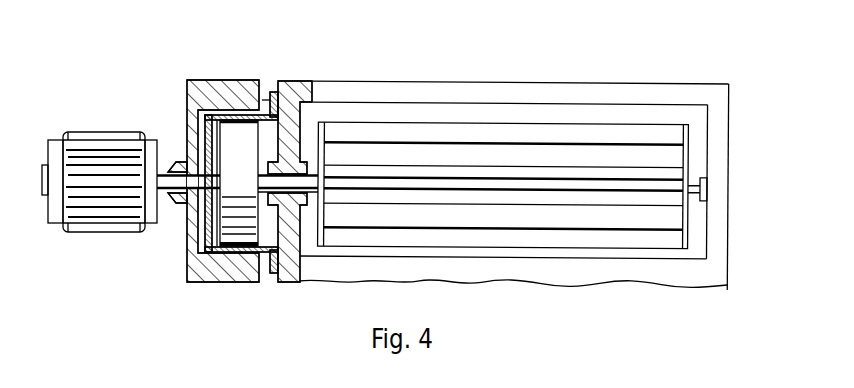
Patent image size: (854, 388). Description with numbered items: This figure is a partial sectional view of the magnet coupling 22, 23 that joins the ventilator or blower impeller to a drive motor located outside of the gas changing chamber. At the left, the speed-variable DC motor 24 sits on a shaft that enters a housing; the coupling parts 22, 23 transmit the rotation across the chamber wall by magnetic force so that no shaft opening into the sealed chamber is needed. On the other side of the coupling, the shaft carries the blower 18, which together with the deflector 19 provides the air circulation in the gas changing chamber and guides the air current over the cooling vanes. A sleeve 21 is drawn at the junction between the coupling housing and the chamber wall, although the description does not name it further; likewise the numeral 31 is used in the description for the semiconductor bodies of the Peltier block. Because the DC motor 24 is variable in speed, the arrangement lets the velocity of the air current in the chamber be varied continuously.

The blower 18 is at (450, 130).
The deflector 19 is at (652, 272).
The sleeve 21 is at (262, 254).
The magnet coupling 22 is at (223, 233).
The magnet coupling 23 is at (215, 278).
The speed-variable DC motor 24 is at (83, 222).
The semiconductor bodies 31 is at (688, 92).